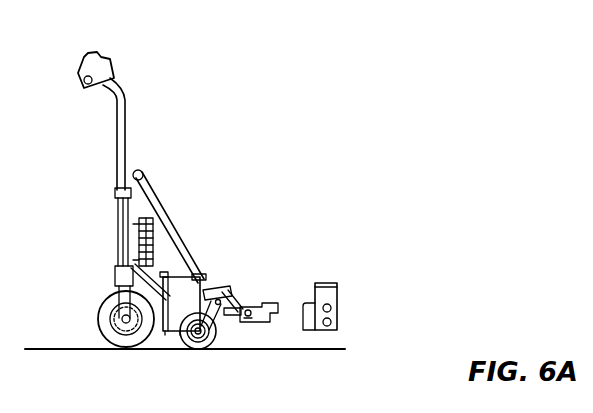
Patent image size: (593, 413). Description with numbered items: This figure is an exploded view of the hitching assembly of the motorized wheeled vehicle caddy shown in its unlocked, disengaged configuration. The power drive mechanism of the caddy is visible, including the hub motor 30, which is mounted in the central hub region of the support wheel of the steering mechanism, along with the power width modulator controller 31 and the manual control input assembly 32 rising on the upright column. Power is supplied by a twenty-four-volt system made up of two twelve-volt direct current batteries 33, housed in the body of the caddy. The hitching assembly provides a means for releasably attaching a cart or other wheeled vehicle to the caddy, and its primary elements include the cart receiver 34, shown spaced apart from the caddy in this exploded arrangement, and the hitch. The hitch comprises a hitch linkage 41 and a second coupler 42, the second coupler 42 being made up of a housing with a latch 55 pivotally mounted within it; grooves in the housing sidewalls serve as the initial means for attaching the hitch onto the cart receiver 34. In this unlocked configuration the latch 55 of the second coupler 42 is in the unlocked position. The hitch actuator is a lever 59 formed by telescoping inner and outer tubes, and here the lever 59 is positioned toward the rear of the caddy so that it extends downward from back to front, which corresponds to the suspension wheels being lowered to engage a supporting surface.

The hub motor 30 is at (112, 322).
The power width modulator (PWM) controller 31 is at (158, 231).
The manual control input assembly 32 is at (83, 57).
The direct current battery 33 is at (171, 332).
The cart receiver 34 is at (340, 297).
The hitch linkage 41 is at (238, 293).
The second coupler 42 is at (276, 306).
The latch 55 is at (250, 323).
The lever 59 is at (168, 231).